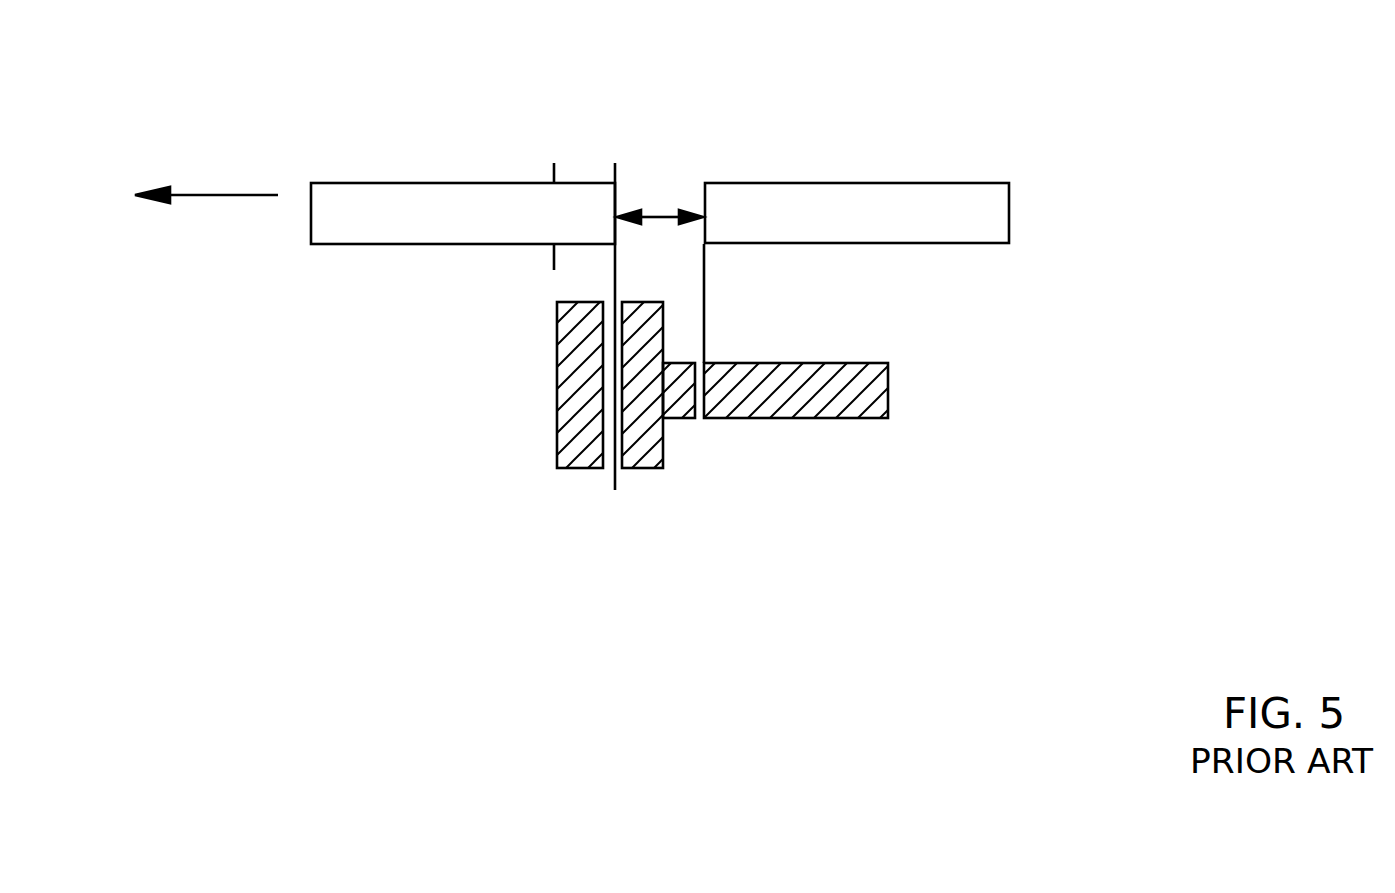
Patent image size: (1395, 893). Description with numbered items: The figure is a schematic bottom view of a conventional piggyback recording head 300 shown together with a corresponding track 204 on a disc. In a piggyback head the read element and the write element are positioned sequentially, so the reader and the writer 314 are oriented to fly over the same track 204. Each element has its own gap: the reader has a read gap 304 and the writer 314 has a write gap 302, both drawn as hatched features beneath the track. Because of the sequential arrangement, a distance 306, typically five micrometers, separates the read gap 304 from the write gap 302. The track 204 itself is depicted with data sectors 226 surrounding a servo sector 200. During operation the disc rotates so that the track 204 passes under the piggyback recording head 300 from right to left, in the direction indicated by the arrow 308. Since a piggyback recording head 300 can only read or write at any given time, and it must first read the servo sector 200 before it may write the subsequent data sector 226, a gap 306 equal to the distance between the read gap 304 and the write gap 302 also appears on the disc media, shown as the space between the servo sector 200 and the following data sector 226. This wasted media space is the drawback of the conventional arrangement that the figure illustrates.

The servo sector 200 is at (577, 175).
The track 204 is at (982, 124).
The data sector 226 is at (688, 200).
The piggyback recording head 300 is at (790, 447).
The write gap 302 is at (726, 348).
The read gap 304 is at (595, 490).
The distance 306 is at (662, 208).
The arrow 308 is at (195, 195).
The writer 314 is at (680, 418).